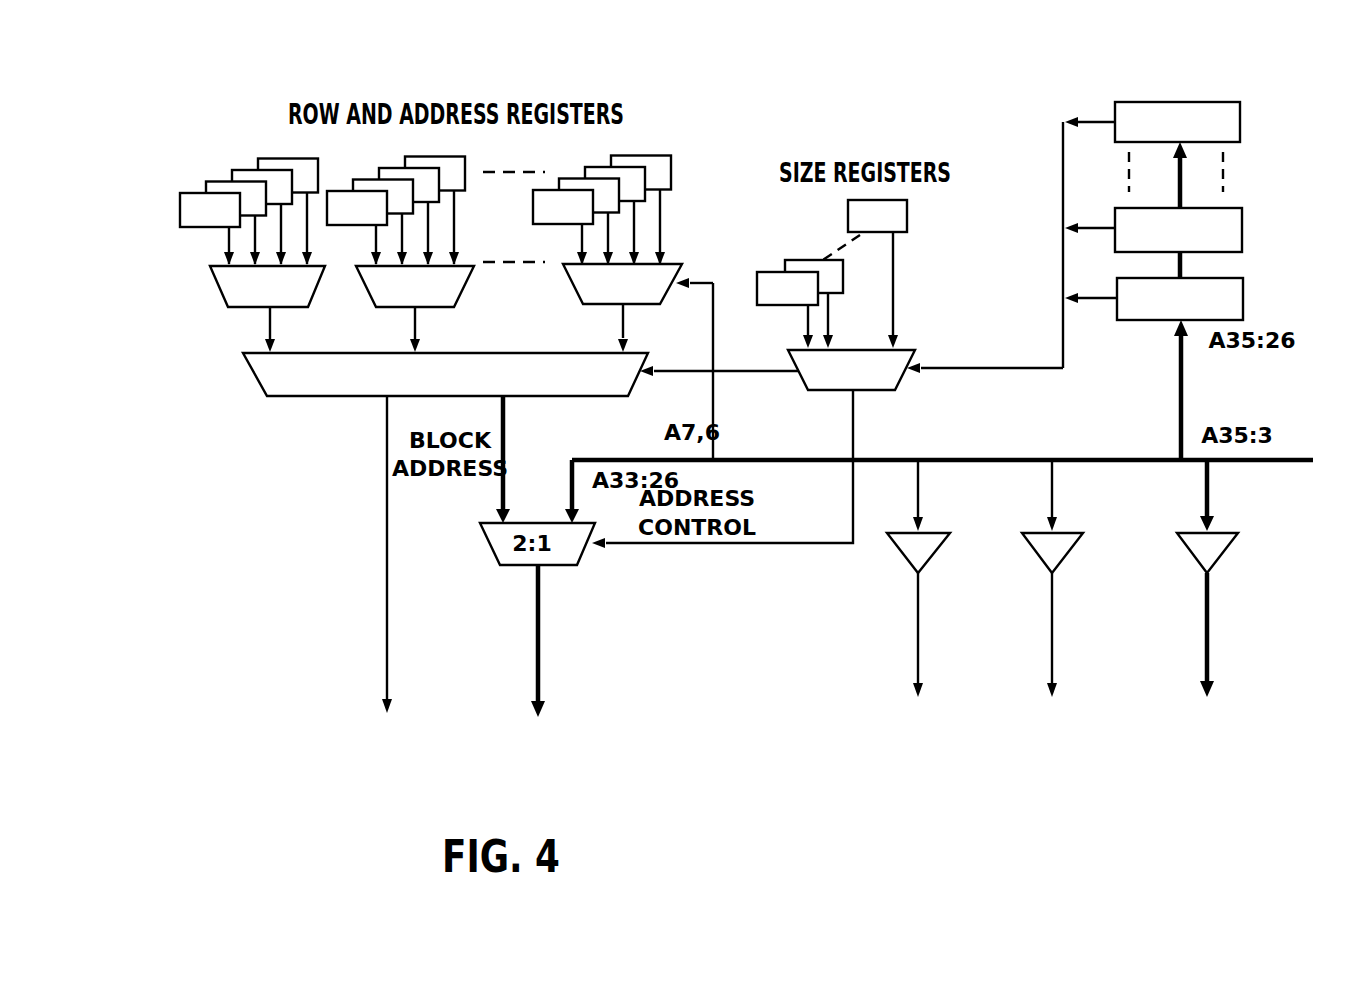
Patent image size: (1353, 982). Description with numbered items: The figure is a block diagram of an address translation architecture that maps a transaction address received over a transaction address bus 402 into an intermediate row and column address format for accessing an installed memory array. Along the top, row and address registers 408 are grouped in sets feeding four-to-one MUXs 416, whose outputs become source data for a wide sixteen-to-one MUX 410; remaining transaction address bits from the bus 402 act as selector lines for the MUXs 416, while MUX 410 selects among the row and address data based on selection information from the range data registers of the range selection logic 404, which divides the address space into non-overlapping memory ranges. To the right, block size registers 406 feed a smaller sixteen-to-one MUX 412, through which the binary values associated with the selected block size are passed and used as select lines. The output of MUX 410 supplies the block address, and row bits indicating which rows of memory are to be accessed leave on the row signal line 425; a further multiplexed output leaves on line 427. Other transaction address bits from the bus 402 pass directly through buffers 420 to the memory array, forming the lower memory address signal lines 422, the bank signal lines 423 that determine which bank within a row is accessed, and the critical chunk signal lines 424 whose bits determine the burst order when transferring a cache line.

The transaction address bus 402 is at (1300, 463).
The range selection logic 404 is at (1257, 98).
The block size registers 406 is at (920, 203).
The row and address registers 408 is at (162, 158).
The MUX 410 is at (253, 380).
The MUX 412 is at (903, 380).
The MUXs 416 is at (313, 300).
The buffers 420 is at (930, 557).
The lower memory address signal lines 422 is at (918, 668).
The bank signal lines 423 is at (1052, 668).
The critical chunk signal lines 424 is at (1207, 668).
The row signal line 425 is at (385, 657).
The M22:15 output line 427 is at (537, 655).